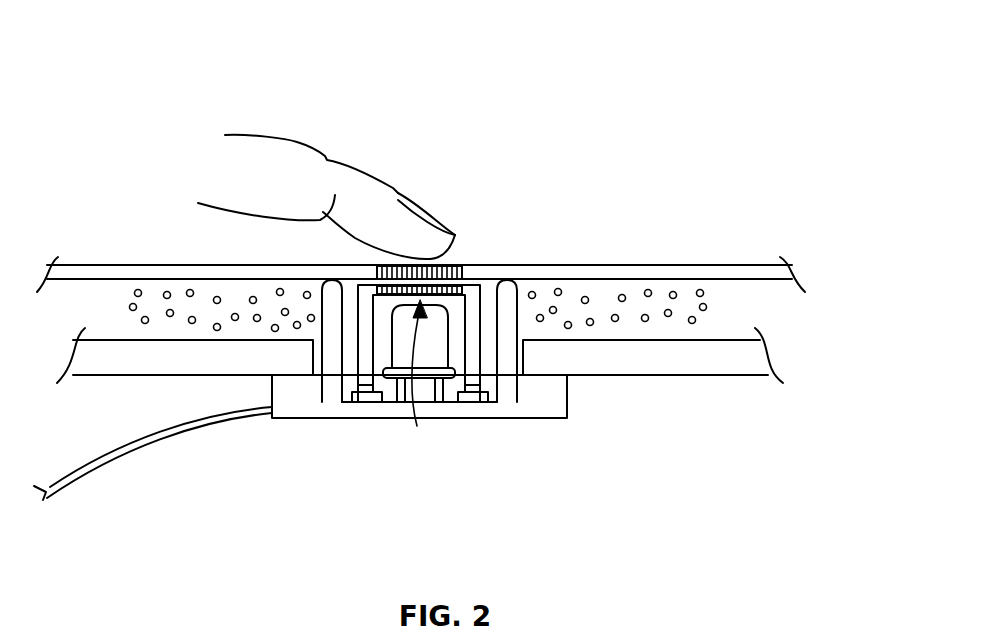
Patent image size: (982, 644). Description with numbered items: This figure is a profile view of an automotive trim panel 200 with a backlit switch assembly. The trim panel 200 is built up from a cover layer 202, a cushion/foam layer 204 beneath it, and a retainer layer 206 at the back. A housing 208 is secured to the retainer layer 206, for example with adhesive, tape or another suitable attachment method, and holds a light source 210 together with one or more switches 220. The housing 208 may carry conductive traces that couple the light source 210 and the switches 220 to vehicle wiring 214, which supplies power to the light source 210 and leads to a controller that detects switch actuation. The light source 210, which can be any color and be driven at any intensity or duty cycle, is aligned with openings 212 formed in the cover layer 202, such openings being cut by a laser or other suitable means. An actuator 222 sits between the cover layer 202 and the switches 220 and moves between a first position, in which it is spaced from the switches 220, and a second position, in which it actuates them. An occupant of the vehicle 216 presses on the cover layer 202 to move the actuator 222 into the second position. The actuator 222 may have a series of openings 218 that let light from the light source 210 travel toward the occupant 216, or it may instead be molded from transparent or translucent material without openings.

The trim panel 200 is at (613, 201).
The cover layer 202 is at (707, 264).
The cushion/foam layer 204 is at (712, 318).
The retainer layer 206 is at (702, 375).
The housing 208 is at (440, 419).
The light source 210 is at (392, 350).
The openings 212 is at (455, 261).
The vehicle wiring 214 is at (85, 470).
The occupant of the vehicle 216 is at (297, 142).
The openings 218 is at (417, 379).
The switches 220 is at (488, 394).
The actuator 222 is at (473, 298).